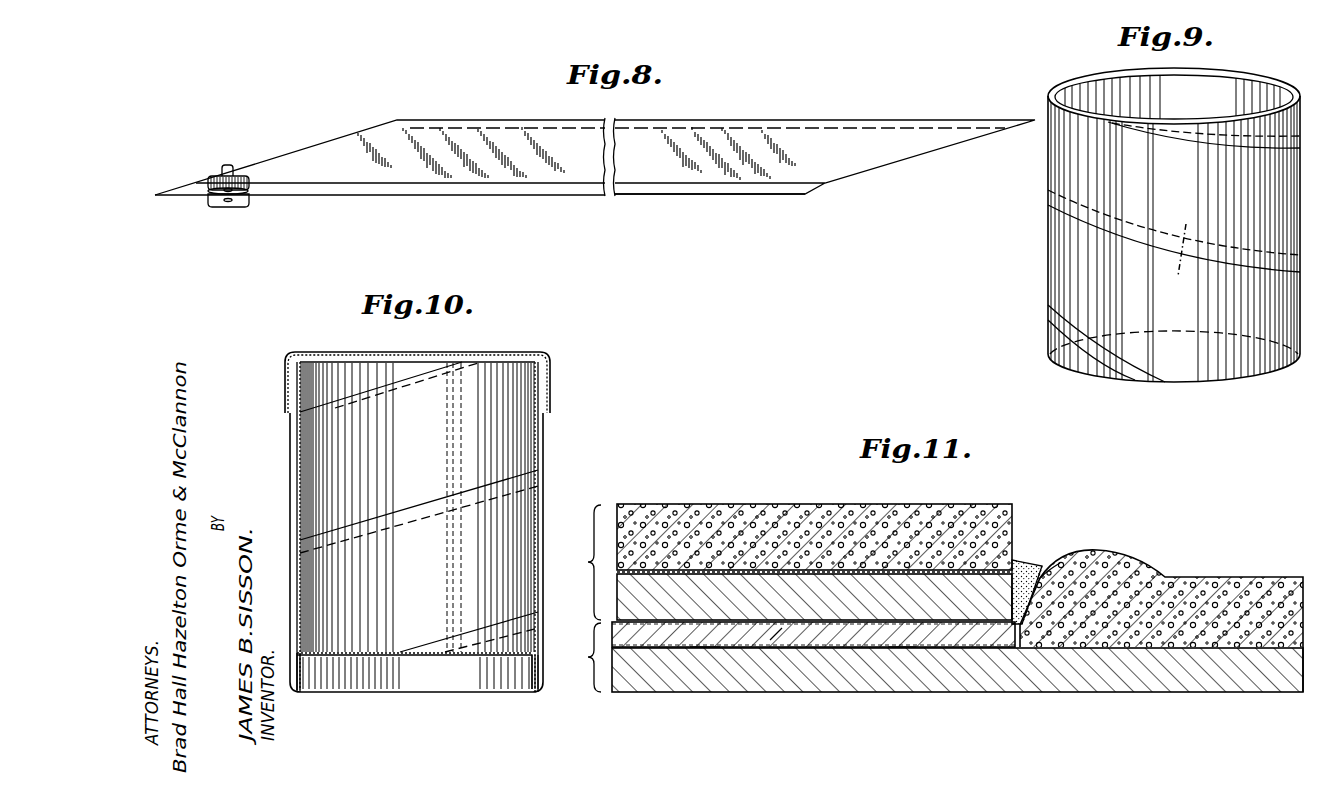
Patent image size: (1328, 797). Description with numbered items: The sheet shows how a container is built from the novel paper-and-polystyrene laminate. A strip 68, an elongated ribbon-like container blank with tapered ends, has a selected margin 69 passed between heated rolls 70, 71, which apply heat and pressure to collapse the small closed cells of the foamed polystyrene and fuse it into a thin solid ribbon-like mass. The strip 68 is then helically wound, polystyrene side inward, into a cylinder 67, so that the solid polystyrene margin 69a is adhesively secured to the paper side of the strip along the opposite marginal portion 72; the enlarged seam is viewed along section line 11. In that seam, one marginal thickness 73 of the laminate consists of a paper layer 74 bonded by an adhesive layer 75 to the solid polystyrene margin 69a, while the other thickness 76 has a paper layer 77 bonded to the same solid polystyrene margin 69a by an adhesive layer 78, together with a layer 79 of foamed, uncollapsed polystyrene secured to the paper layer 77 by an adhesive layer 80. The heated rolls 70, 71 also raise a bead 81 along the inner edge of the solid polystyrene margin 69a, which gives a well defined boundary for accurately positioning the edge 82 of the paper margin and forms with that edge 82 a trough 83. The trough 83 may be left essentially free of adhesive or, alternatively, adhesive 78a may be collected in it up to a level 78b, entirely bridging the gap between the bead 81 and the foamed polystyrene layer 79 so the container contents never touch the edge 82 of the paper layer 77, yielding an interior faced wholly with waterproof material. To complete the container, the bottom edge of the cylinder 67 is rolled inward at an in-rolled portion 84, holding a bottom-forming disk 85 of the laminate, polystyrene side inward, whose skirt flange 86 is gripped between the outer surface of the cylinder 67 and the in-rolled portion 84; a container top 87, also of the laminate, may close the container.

In FIG. 9, the section line 11 is at (1183, 232).
In FIG. 9, the cylinder 67 is at (1048, 276).
In FIG. 10, the cylinder 67 is at (543, 460).
In FIG. 8, the strip 68 is at (642, 173).
In FIG. 8, the margin 69 is at (435, 190).
In FIG. 11, the solid polystyrene margin 69a is at (778, 633).
In FIG. 8, the heated roll 70 is at (217, 178).
In FIG. 8, the heated roll 71 is at (222, 208).
In FIG. 8, the opposite marginal portion 72 is at (495, 126).
In FIG. 11, the opposite marginal portion 72 is at (843, 602).
In FIG. 11, the marginal thickness 73 is at (584, 657).
In FIG. 11, the paper layer 74 is at (640, 677).
In FIG. 11, the adhesive layer 75 is at (705, 647).
In FIG. 11, the thickness 76 is at (584, 562).
In FIG. 11, the paper layer 77 is at (970, 597).
In FIG. 11, the adhesive layer 78 is at (902, 647).
In FIG. 11, the adhesive 78a is at (1013, 607).
In FIG. 11, the adhesive level 78b is at (1047, 563).
In FIG. 11, the foamed polystyrene layer 79 is at (763, 507).
In FIG. 11, the adhesive layer 80 is at (838, 567).
In FIG. 8, the bead 81 is at (536, 182).
In FIG. 11, the bead 81 is at (1100, 550).
In FIG. 11, the edge 82 is at (1018, 560).
In FIG. 11, the trough 83 is at (1035, 568).
In FIG. 10, the in-rolled portion 84 is at (530, 680).
In FIG. 10, the bottom-forming disk 85 is at (405, 655).
In FIG. 10, the skirt flange 86 is at (300, 692).
In FIG. 10, the container top 87 is at (503, 352).